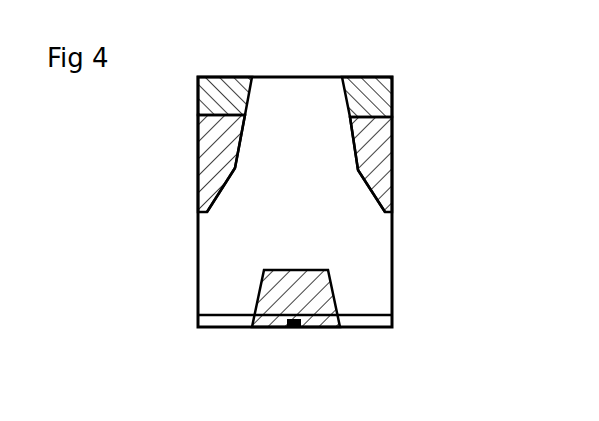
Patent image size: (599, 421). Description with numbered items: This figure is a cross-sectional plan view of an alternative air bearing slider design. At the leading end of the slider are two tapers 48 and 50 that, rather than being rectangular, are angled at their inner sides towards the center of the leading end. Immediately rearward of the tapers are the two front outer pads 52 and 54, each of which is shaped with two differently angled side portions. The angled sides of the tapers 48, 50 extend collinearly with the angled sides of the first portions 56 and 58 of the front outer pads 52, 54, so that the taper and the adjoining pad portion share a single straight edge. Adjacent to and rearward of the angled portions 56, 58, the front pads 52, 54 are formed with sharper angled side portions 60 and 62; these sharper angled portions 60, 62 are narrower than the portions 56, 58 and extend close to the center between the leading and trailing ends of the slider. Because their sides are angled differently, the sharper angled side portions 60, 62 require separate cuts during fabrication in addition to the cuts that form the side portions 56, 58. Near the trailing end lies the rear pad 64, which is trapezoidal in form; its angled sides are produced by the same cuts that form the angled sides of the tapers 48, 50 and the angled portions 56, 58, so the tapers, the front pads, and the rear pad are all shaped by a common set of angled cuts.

The taper 48 is at (169, 106).
The taper 50 is at (428, 71).
The front outer pad 52 is at (164, 164).
The front outer pad 54 is at (432, 167).
The angled portion 56 is at (243, 89).
The angled portion 58 is at (354, 90).
The sharper angled side portion 60 is at (170, 234).
The sharper angled side portion 62 is at (423, 238).
The rear pad 64 is at (255, 337).